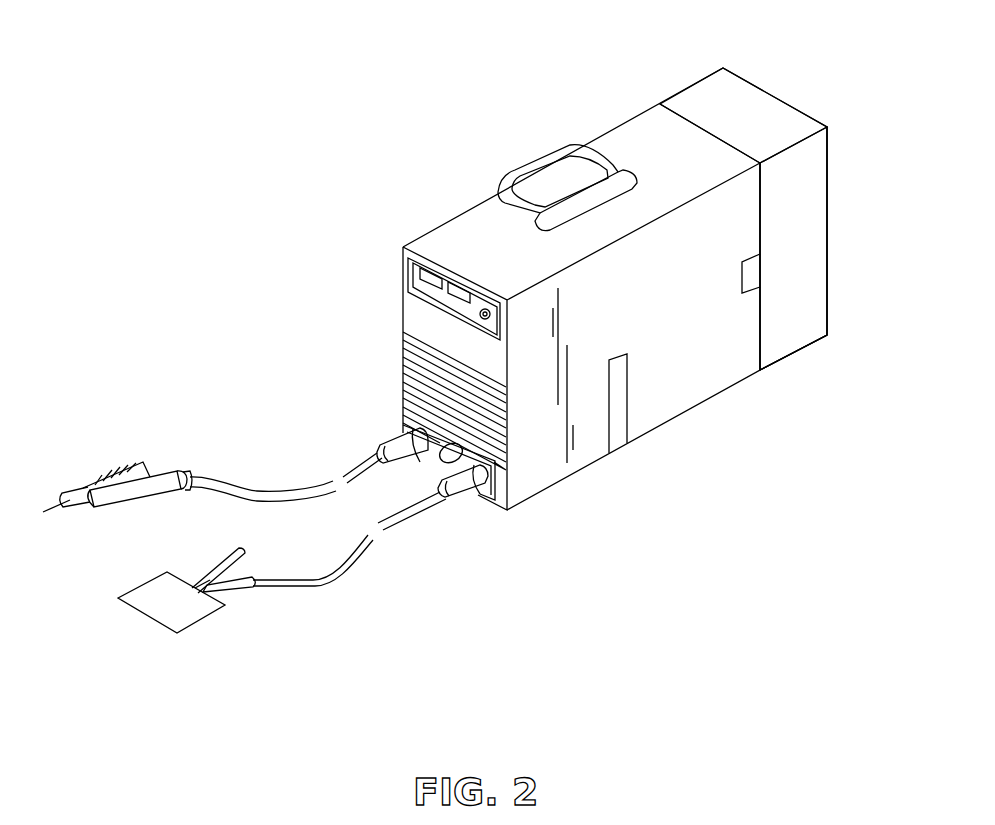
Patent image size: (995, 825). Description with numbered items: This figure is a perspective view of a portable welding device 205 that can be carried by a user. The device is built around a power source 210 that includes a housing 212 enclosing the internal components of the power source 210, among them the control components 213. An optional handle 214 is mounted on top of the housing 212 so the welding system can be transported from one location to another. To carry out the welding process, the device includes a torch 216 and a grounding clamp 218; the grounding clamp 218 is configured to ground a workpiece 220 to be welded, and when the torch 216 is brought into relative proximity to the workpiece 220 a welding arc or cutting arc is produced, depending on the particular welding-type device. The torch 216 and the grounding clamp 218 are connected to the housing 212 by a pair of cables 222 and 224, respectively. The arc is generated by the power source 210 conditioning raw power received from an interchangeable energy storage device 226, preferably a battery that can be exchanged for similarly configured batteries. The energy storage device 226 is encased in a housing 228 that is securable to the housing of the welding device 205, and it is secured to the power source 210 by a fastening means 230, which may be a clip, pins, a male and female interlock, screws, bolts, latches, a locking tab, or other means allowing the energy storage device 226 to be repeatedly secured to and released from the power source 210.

The welding system 205 is at (343, 61).
The power source 210 is at (437, 250).
The housing 212 is at (616, 320).
The control components 213 is at (628, 408).
The handle 214 is at (553, 152).
The torch 216 is at (163, 472).
The grounding clamp 218 is at (233, 550).
The workpiece 220 is at (145, 612).
The cable 222 is at (252, 492).
The cable 224 is at (320, 583).
The energy storage device 226 is at (775, 85).
The housing 228 is at (806, 243).
The fastening means 230 is at (743, 281).